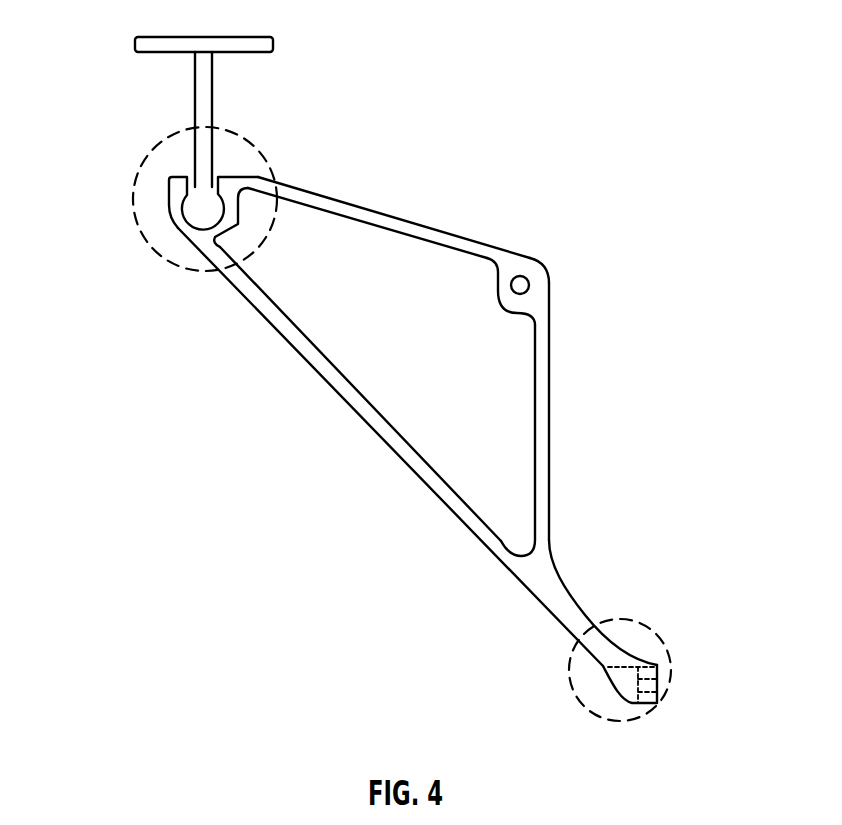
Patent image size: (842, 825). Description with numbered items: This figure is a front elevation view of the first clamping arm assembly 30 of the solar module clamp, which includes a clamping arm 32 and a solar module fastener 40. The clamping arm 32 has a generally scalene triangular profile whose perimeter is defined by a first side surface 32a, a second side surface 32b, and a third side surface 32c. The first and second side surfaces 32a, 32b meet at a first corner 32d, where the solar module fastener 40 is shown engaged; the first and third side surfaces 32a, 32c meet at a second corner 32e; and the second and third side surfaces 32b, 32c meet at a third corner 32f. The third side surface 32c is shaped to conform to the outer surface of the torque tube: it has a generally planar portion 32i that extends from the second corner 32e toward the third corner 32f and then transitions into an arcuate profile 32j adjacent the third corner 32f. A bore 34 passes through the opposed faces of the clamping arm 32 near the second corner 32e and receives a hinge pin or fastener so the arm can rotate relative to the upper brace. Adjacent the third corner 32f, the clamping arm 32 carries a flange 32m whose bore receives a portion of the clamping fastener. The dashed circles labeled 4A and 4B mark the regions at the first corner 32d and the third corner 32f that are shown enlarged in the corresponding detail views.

The first clamping arm assembly 30 is at (415, 395).
The clamping arm 32 is at (415, 444).
The first side surface 32a is at (373, 210).
The second side surface 32b is at (400, 454).
The third side surface 32c is at (575, 419).
The first corner 32d is at (168, 222).
The second corner 32e is at (555, 307).
The third corner 32f is at (634, 699).
The generally planar portion 32i is at (551, 378).
The arcuate profile 32j is at (563, 585).
The flange 32m is at (658, 683).
The bore 34 is at (520, 298).
The solar module fastener 40 is at (345, 43).
The detail view callout 4A is at (196, 272).
The detail view callout 4B is at (572, 677).